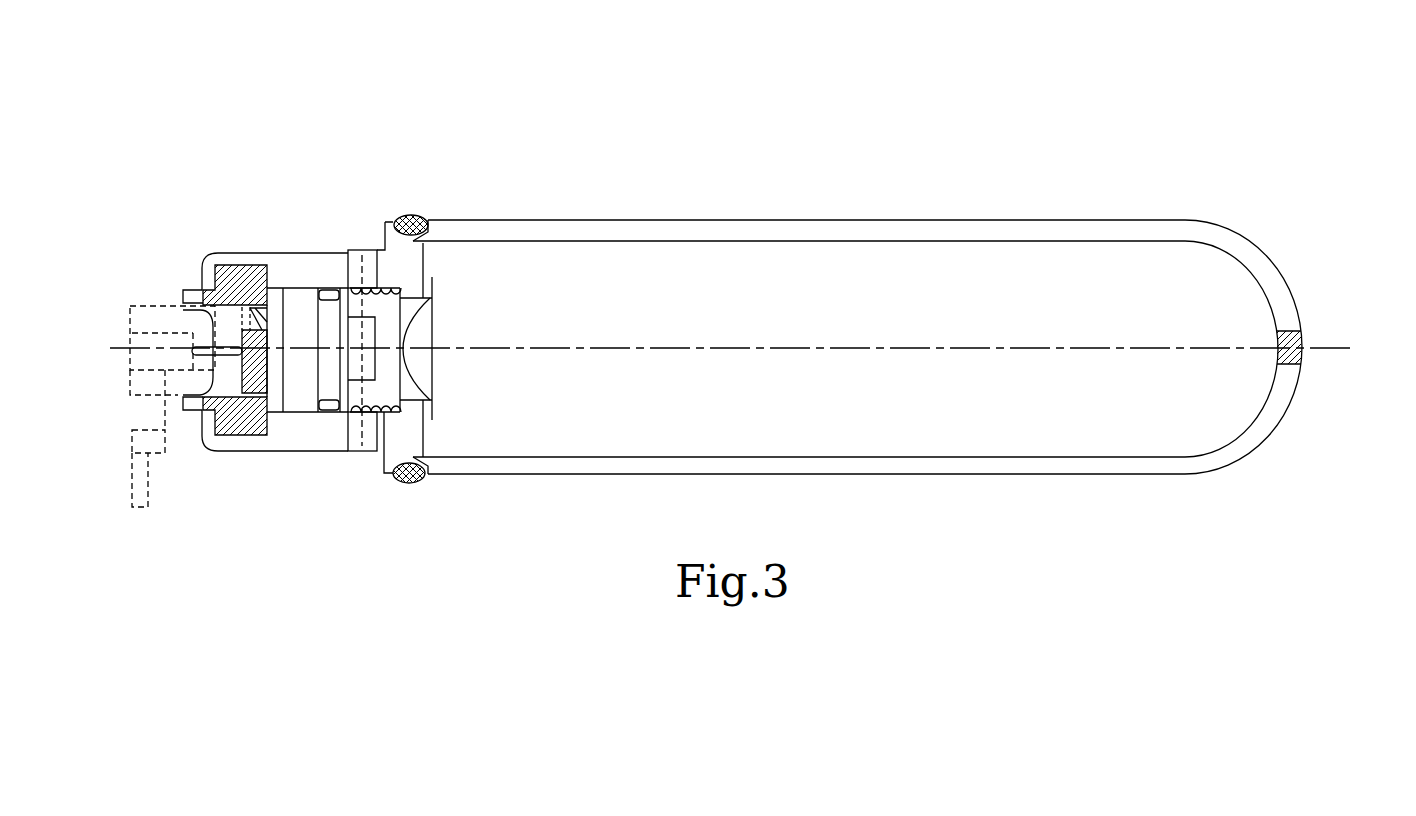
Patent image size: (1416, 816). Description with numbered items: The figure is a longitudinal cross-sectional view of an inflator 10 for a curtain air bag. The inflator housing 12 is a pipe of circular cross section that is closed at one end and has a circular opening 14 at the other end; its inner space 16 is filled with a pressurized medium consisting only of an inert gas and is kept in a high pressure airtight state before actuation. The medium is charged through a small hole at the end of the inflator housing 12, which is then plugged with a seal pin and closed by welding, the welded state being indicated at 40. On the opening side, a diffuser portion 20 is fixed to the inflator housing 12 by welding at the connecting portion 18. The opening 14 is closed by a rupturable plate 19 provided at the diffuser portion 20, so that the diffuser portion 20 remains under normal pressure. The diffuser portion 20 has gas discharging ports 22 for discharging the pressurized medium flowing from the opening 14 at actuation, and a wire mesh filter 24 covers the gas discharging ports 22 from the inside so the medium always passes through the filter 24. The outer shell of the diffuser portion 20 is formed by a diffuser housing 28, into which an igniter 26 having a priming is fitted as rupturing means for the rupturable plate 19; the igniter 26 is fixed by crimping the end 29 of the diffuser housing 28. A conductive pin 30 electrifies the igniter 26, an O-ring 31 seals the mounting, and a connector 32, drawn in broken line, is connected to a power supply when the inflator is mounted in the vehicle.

The inflator 10 is at (588, 182).
The inflator housing 12 is at (749, 221).
The opening 14 is at (421, 432).
The inner space 16 is at (868, 297).
The connecting portion 18 is at (420, 222).
The rupturable plate 19 is at (430, 381).
The diffuser portion 20 is at (288, 225).
The gas discharging ports 22 is at (357, 250).
The filter 24 is at (385, 444).
The igniter 26 is at (304, 393).
The diffuser housing 28 is at (278, 265).
The end of the diffuser housing 29 is at (213, 440).
The conductive pin 30 is at (210, 345).
The O-ring 31 is at (322, 396).
The connector 32 is at (148, 385).
The welded closure of the small hole 40 is at (1302, 334).